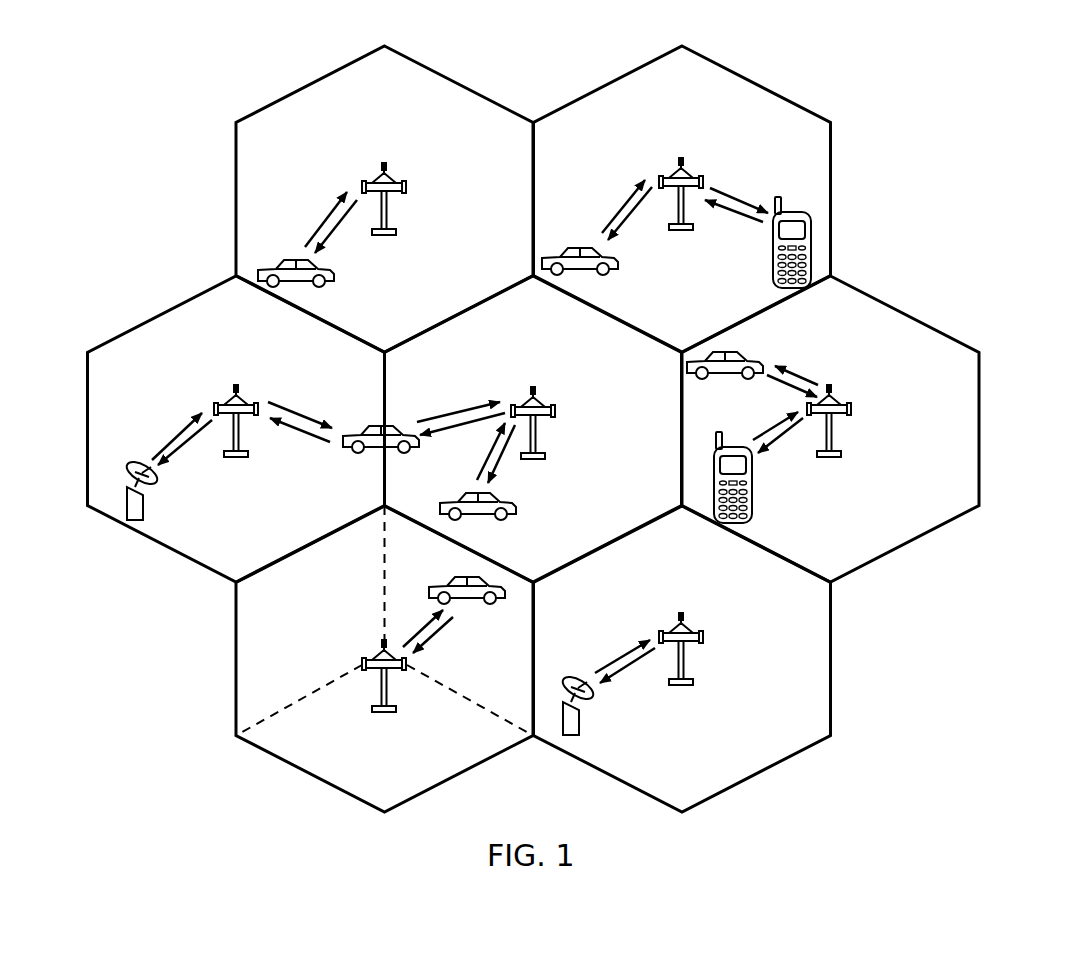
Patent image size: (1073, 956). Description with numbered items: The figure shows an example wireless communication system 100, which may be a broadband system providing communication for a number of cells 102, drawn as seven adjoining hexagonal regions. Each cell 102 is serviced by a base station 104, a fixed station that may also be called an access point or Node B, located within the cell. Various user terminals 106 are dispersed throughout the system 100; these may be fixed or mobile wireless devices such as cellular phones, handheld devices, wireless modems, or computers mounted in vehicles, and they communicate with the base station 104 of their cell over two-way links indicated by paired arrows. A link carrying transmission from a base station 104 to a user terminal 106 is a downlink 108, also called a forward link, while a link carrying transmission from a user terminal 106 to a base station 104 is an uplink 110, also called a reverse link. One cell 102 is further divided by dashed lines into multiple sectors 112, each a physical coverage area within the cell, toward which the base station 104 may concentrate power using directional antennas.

The wireless communication system 100 is at (964, 126).
The cell 102 is at (318, 78).
The base station 104 is at (384, 163).
The user terminal 106 is at (331, 275).
The downlink 108 is at (333, 238).
The uplink 110 is at (325, 220).
The sector 112 is at (437, 770).